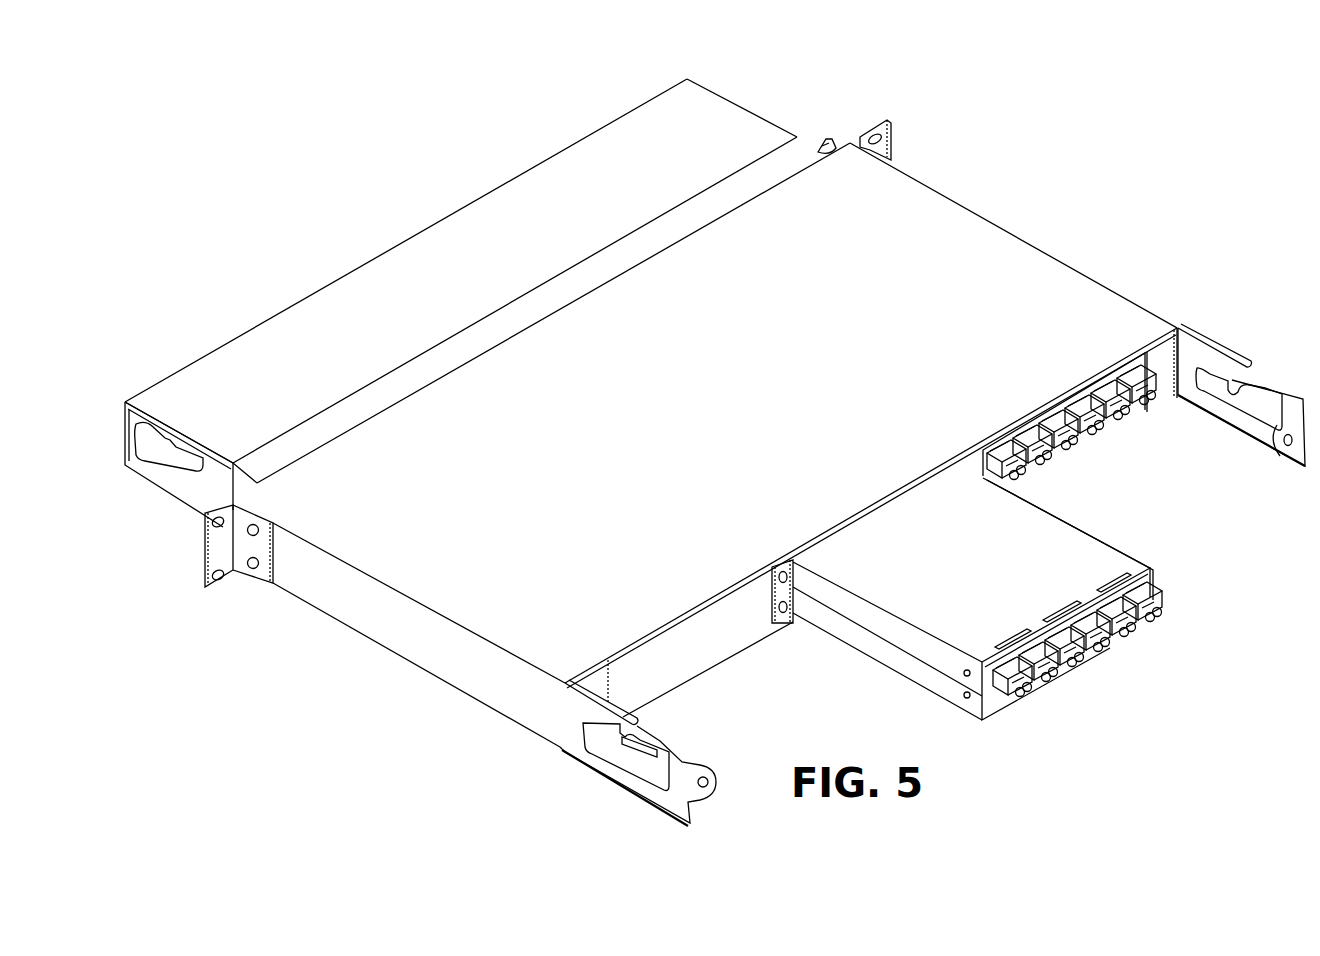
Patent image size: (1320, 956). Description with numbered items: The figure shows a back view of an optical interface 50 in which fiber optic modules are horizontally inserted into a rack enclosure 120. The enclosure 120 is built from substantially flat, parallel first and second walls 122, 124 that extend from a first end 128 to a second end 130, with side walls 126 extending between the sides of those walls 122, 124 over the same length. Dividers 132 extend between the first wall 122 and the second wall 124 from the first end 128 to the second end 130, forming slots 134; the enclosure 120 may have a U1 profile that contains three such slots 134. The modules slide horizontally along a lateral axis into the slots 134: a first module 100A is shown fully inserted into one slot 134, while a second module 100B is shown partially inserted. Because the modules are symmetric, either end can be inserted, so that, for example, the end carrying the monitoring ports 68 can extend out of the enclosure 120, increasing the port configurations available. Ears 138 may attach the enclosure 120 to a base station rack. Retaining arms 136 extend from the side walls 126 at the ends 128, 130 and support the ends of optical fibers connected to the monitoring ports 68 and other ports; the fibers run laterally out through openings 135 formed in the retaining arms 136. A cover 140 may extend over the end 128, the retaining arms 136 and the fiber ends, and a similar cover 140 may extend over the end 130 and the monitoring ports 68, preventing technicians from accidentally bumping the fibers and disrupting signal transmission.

The optical interface 50 is at (417, 192).
The monitoring ports 68 is at (1152, 600).
The first module 100A is at (1060, 392).
The second module 100B is at (1006, 599).
The rack enclosure 120 is at (1105, 300).
The first wall 122 is at (935, 205).
The second wall 124 is at (662, 703).
The side walls 126 is at (430, 655).
The first end 128 is at (834, 139).
The second end 130 is at (1163, 390).
The dividers 132 is at (772, 585).
The slots 134 is at (718, 644).
The openings 135 is at (165, 476).
The retaining arms 136 is at (172, 490).
The ears 138 is at (892, 134).
The cover 140 is at (745, 105).